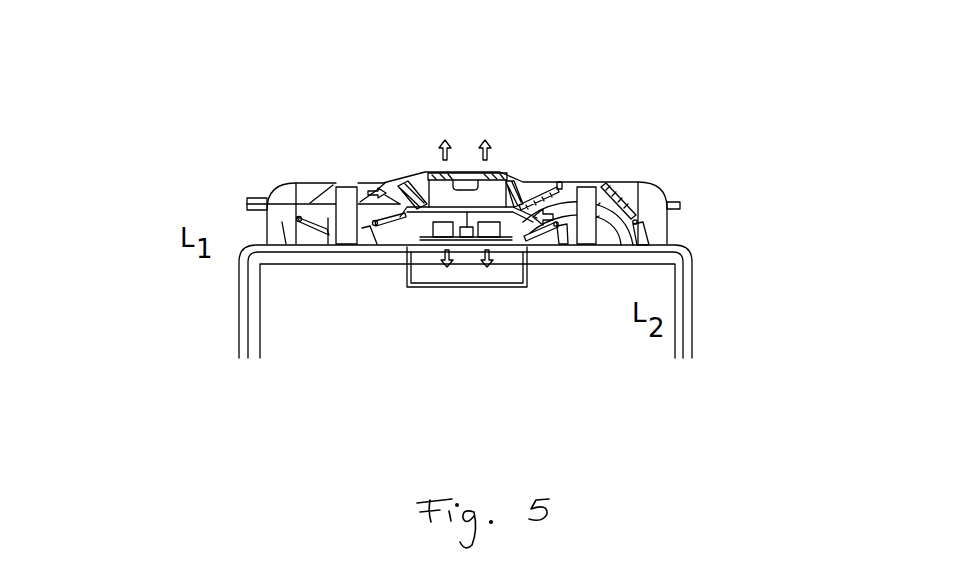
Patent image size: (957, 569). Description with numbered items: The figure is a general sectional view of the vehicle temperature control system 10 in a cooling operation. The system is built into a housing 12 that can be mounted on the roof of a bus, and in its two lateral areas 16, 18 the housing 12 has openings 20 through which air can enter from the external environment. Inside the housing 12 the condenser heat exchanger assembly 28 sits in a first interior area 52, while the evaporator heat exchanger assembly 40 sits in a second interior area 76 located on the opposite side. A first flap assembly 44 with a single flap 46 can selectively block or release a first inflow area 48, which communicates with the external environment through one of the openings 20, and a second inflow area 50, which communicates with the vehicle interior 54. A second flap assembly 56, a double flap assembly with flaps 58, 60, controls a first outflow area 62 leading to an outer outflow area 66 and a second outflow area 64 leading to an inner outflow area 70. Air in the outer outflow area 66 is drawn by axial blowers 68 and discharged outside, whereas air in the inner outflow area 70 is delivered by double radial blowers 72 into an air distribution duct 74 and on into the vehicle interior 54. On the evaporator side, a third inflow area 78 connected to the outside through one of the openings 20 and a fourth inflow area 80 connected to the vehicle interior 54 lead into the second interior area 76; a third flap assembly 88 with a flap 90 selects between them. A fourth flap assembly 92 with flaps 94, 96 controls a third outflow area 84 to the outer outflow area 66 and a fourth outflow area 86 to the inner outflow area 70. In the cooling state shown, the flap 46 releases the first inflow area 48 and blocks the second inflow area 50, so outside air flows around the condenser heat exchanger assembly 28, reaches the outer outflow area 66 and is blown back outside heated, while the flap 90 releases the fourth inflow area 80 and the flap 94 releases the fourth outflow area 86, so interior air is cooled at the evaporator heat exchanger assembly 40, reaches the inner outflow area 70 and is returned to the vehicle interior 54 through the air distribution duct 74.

The vehicle temperature control system 10 is at (639, 99).
The housing 12 is at (267, 229).
The lateral area 16 is at (201, 196).
The lateral area 18 is at (713, 229).
The openings 20 is at (264, 201).
The condenser heat exchanger assembly 28 is at (348, 232).
The evaporator heat exchanger assembly 40 is at (588, 180).
The first flap assembly 44 is at (307, 216).
The flap 46 is at (316, 237).
The first inflow area 48 is at (310, 197).
The second inflow area 50 is at (303, 233).
The interior area 52 is at (366, 190).
The vehicle interior 54 is at (335, 355).
The second flap assembly 56 is at (377, 165).
The first flap 58 is at (384, 180).
The second flap 60 is at (400, 222).
The first outflow area 62 is at (431, 178).
The second outflow area 64 is at (437, 250).
The outer outflow area 66 is at (489, 173).
The axial blowers 68 is at (454, 178).
The inner outflow area 70 is at (510, 226).
The double radial blowers 72 is at (467, 237).
The air distribution duct 74 is at (428, 232).
The second interior area 76 is at (569, 178).
The third inflow area 78 is at (612, 197).
The fourth inflow area 80 is at (612, 240).
The third outflow area 84 is at (529, 178).
The fourth outflow area 86 is at (566, 244).
The third flap assembly 88 is at (645, 207).
The flap 90 is at (627, 180).
The fourth flap assembly 92 is at (554, 170).
The first flap 94 is at (542, 180).
The second flap 96 is at (541, 228).